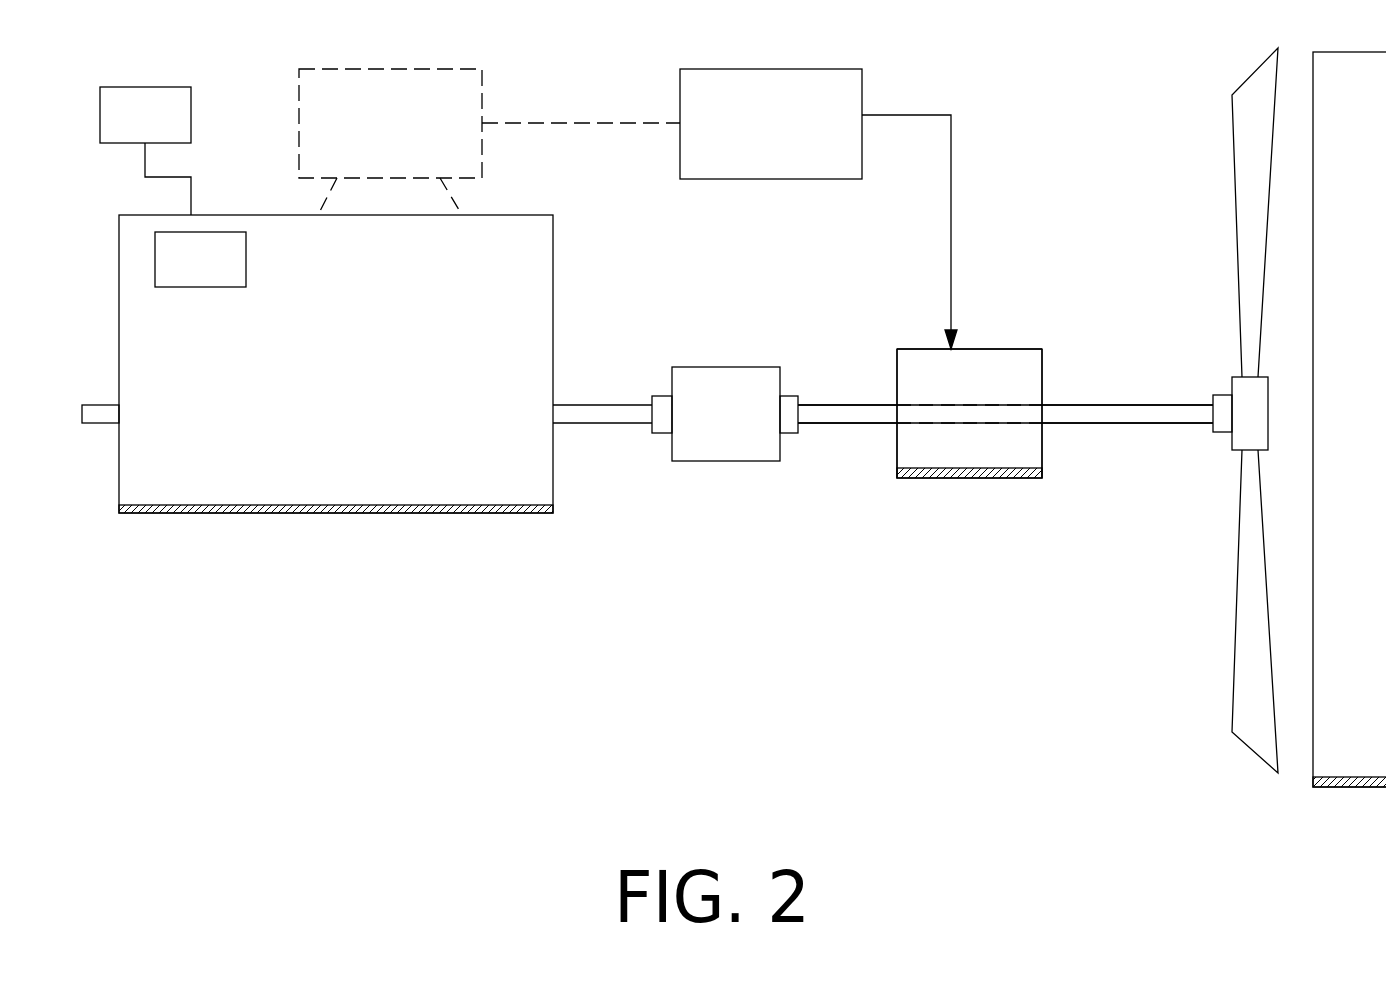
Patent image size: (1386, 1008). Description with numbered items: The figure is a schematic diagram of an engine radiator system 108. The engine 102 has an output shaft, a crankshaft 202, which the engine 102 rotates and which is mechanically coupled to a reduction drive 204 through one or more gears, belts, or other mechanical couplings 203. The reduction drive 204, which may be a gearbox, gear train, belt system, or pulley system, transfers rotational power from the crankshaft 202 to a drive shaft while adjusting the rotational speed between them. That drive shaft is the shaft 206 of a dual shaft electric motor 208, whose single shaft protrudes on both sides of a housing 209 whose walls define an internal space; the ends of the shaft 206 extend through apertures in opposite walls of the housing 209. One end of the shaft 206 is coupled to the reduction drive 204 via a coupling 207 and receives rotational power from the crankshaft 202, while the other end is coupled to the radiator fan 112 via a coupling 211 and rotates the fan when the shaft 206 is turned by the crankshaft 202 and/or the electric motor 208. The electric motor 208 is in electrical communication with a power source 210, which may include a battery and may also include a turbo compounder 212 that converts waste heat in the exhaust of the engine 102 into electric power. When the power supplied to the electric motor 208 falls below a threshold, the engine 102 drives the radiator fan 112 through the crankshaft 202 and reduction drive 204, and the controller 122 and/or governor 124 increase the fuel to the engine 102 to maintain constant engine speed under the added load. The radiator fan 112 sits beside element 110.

The engine 102 is at (314, 373).
The engine radiator system 108 is at (256, 49).
The fan duct / nacelle 110 is at (1330, 421).
The radiator fan 112 is at (1232, 95).
The controller 122 is at (123, 128).
The governor 124 is at (178, 272).
The crankshaft 202 is at (644, 405).
The mechanical couplings 203 is at (651, 434).
The reduction drive 204 is at (704, 425).
The shaft 206 is at (1115, 432).
The coupling 207 is at (798, 434).
The electric motor 208 is at (948, 466).
The housing 209 is at (983, 349).
The power source 210 is at (749, 136).
The coupling 211 is at (1213, 432).
The turbo compounder 212 is at (368, 136).